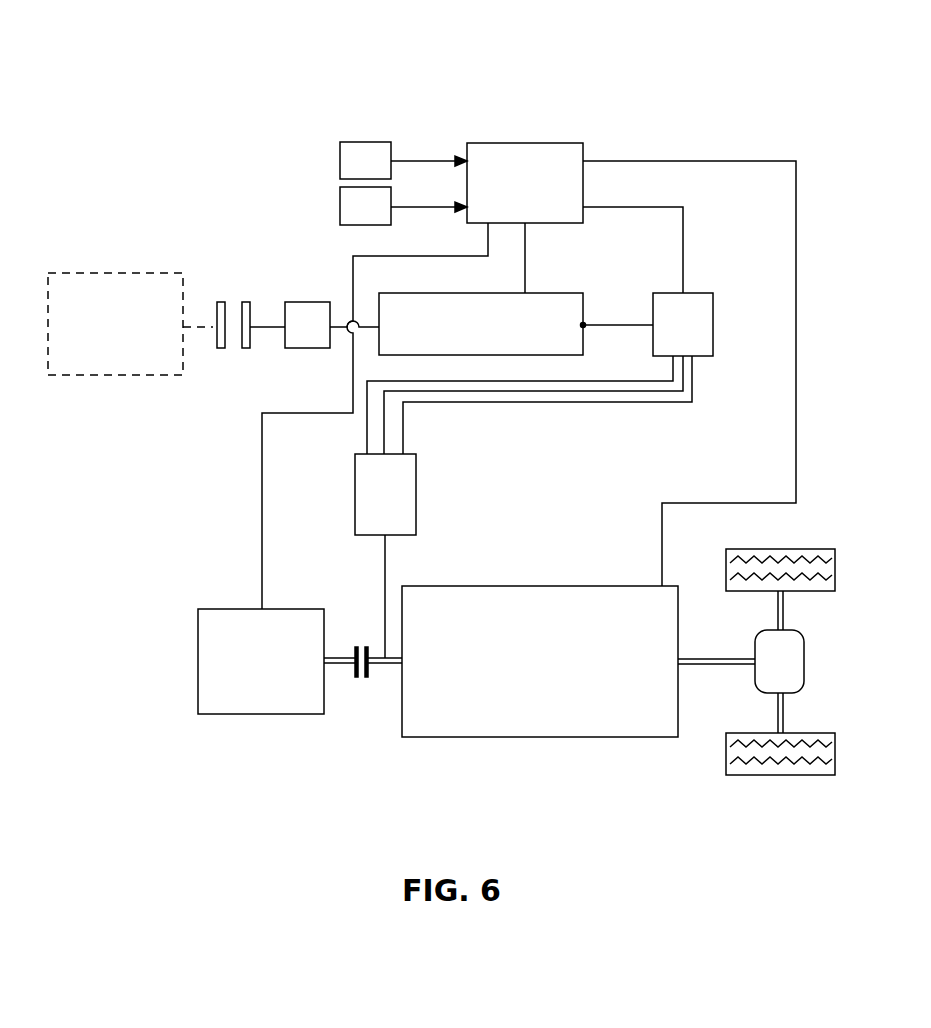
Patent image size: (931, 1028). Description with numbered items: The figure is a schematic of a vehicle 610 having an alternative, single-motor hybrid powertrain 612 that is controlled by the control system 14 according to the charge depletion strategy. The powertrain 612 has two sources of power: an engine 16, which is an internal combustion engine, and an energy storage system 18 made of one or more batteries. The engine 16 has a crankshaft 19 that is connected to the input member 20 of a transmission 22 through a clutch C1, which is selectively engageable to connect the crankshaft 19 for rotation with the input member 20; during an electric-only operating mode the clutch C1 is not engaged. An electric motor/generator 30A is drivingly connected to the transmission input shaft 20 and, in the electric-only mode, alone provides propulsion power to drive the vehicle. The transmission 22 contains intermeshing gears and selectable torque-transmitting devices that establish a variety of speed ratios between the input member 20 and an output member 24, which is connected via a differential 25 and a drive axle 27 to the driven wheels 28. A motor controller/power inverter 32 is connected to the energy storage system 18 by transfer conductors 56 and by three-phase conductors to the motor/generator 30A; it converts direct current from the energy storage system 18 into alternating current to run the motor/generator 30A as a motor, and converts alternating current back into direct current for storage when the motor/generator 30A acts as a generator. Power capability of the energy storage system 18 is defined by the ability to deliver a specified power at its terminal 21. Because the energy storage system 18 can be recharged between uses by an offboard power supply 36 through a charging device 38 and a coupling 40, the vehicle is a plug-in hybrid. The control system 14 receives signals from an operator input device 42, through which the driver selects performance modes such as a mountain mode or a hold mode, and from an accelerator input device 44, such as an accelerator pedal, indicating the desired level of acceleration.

The vehicle 610 is at (748, 40).
The hybrid powertrain 612 is at (332, 769).
The control system 14 is at (563, 143).
The engine 16 is at (215, 609).
The energy storage system 18 is at (563, 293).
The crankshaft 19 is at (338, 656).
The input member 20 is at (372, 668).
The ESS terminal 21 is at (584, 325).
The transmission 22 is at (640, 737).
The output member 24 is at (716, 668).
The differential 25 is at (806, 658).
The drive axle 27 is at (786, 612).
The driven wheels 28 is at (811, 549).
The electric motor/generator 30A is at (416, 480).
The power inverter 32 is at (713, 328).
The offboard power supply 36 is at (82, 273).
The charging device 38 is at (295, 302).
The coupling 40 is at (232, 356).
The operator input device 42 is at (340, 160).
The accelerator input device 44 is at (340, 205).
The transfer conductors 56 is at (660, 381).
The clutch C1 is at (361, 689).